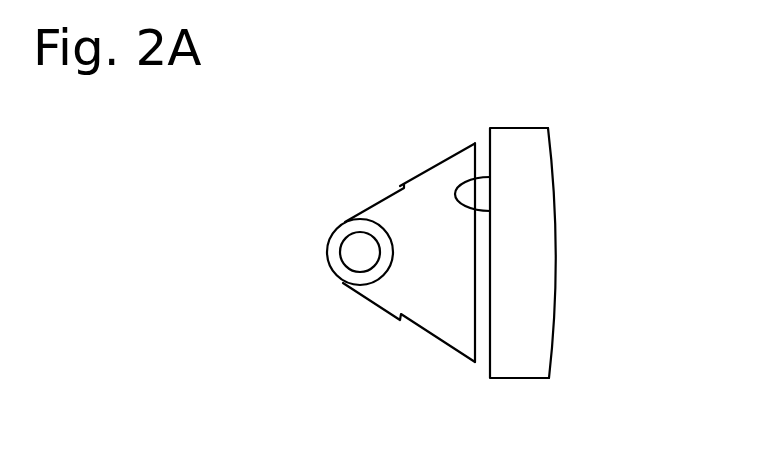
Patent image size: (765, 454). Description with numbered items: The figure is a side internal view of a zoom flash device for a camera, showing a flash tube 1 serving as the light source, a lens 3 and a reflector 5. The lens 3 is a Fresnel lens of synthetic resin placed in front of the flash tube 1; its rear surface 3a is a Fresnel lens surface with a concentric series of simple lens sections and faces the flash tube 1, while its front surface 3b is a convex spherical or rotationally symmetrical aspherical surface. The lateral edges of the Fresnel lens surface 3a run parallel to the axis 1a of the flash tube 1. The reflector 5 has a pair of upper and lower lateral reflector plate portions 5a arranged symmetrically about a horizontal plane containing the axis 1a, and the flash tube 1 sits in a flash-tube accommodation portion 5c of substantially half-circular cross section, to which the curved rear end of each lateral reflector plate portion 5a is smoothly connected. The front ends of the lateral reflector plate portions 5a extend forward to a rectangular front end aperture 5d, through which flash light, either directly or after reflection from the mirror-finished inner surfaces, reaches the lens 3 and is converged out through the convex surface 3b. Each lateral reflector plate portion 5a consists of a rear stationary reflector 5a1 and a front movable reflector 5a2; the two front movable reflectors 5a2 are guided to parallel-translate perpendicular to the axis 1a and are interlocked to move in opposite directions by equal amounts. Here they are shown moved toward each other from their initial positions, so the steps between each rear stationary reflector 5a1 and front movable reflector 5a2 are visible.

The lens 3 is at (527, 120).
The rear surface (Fresnel lens surface) 3a is at (490, 211).
The front surface (convex surface) 3b is at (553, 153).
The reflector 5 is at (405, 332).
The lateral reflector plate portion 5a is at (400, 92).
The rear stationary reflector 5a1 is at (370, 204).
The front movable reflector 5a2 is at (432, 165).
The flash-tube accommodation portion 5c is at (331, 263).
The front end aperture (discharge aperture) 5d is at (475, 311).
The flash tube 1 is at (358, 252).
The axis 1a is at (360, 252).